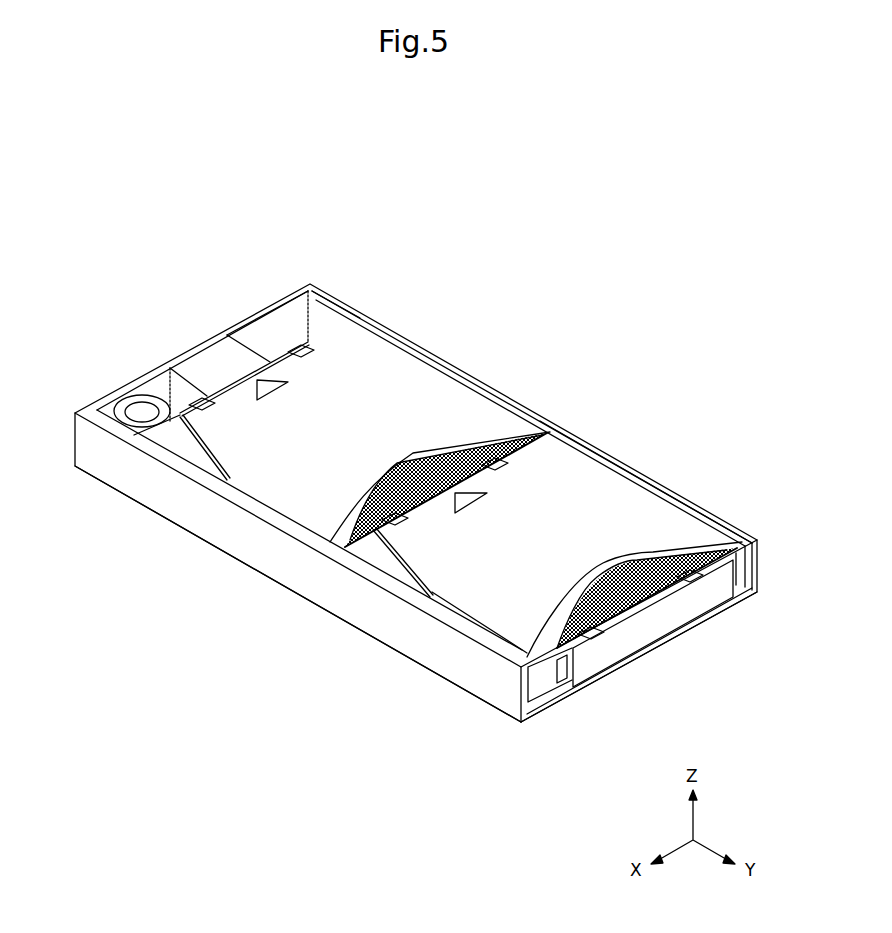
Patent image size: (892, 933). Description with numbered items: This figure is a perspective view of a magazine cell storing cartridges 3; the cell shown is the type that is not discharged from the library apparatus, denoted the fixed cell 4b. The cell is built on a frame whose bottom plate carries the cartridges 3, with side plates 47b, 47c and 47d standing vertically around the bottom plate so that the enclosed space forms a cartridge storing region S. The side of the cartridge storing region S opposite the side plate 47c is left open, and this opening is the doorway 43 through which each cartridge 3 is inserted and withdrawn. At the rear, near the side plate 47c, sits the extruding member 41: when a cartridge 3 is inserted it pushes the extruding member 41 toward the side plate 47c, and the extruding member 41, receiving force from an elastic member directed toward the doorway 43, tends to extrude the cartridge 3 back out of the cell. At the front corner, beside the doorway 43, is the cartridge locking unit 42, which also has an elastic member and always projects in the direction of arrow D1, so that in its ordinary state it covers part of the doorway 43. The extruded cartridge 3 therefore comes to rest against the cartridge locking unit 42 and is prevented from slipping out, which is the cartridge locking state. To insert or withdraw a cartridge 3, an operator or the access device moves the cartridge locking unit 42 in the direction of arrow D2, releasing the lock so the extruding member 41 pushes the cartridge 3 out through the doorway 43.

The fixed cell 4b is at (462, 250).
The extruding member 41 is at (152, 425).
The cartridge 3 is at (432, 385).
The side plate 47c is at (265, 300).
The cartridge storing region S is at (330, 313).
The side plate 47b is at (590, 437).
The side plate 47d is at (233, 497).
The cartridge locking unit 42 is at (547, 676).
The doorway 43 is at (700, 630).
The arrow D1 is at (536, 727).
The arrow D2 is at (582, 722).